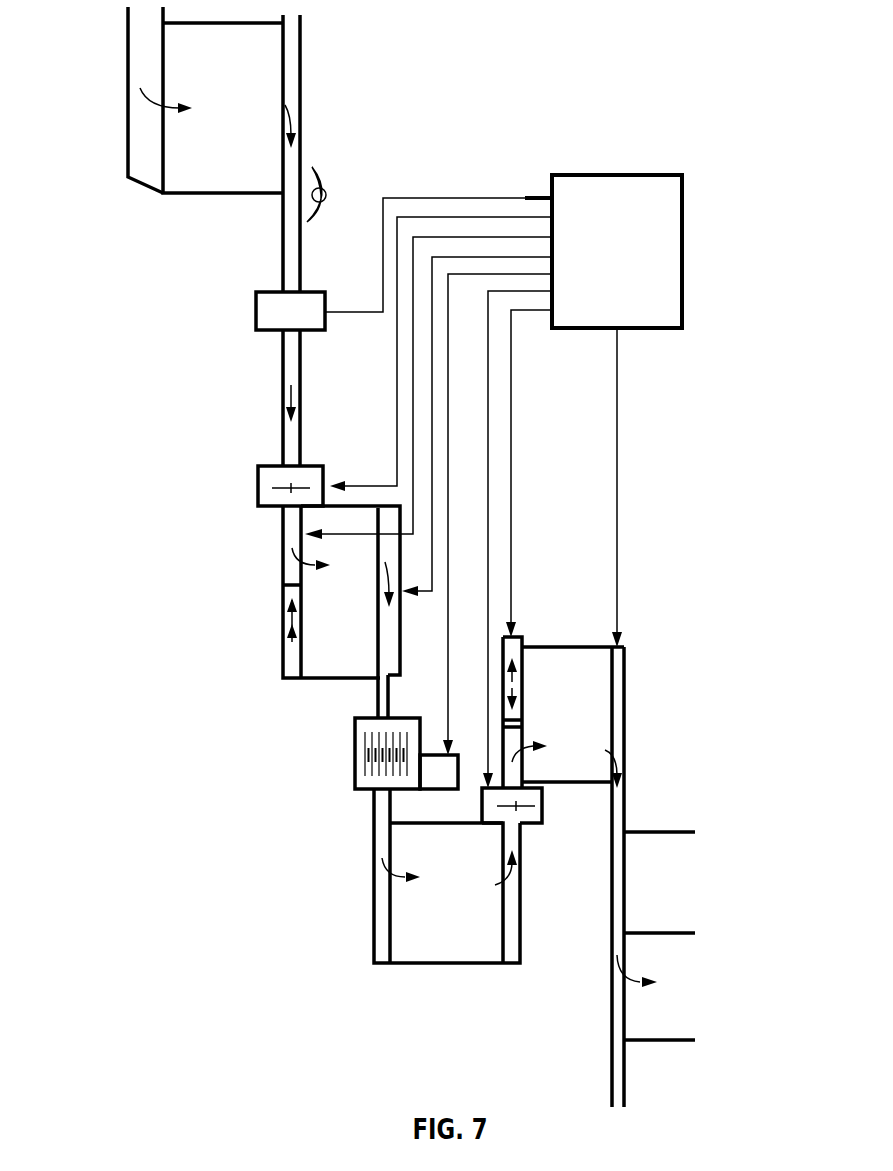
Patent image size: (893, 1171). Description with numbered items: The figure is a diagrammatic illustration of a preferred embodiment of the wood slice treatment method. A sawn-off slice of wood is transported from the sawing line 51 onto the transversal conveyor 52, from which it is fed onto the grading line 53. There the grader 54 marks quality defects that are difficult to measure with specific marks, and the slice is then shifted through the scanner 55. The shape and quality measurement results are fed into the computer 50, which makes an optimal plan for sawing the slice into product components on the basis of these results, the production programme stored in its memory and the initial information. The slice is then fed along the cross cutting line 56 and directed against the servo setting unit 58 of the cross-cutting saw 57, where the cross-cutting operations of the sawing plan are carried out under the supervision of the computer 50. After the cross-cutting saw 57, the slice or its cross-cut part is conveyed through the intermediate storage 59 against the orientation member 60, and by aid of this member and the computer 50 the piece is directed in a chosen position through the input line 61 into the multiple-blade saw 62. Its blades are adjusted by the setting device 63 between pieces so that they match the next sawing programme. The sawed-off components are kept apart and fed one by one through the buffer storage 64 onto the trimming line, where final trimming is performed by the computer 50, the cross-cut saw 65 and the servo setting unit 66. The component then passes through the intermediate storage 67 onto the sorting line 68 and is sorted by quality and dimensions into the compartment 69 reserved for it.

The computer 50 is at (662, 274).
The sawing line 51 is at (134, 60).
The transversal conveyor 52 is at (190, 163).
The grading line 53 is at (292, 78).
The grader 54 is at (327, 180).
The scanner 55 is at (268, 310).
The cross cutting line 56 is at (289, 435).
The cross-cutting saw 57 is at (266, 490).
The servo setting unit 58 is at (292, 572).
The intermediate storage 59 is at (323, 668).
The orientation member 60 is at (395, 655).
The input line 61 is at (383, 695).
The multiple-blade saw 62 is at (360, 782).
The setting device 63 is at (440, 782).
The buffer storage 64 is at (408, 908).
The cross-cut saw 65 is at (542, 818).
The servo setting unit 66 is at (517, 632).
The intermediate storage 67 is at (600, 705).
The sorting line 68 is at (620, 817).
The compartment 69 is at (683, 895).